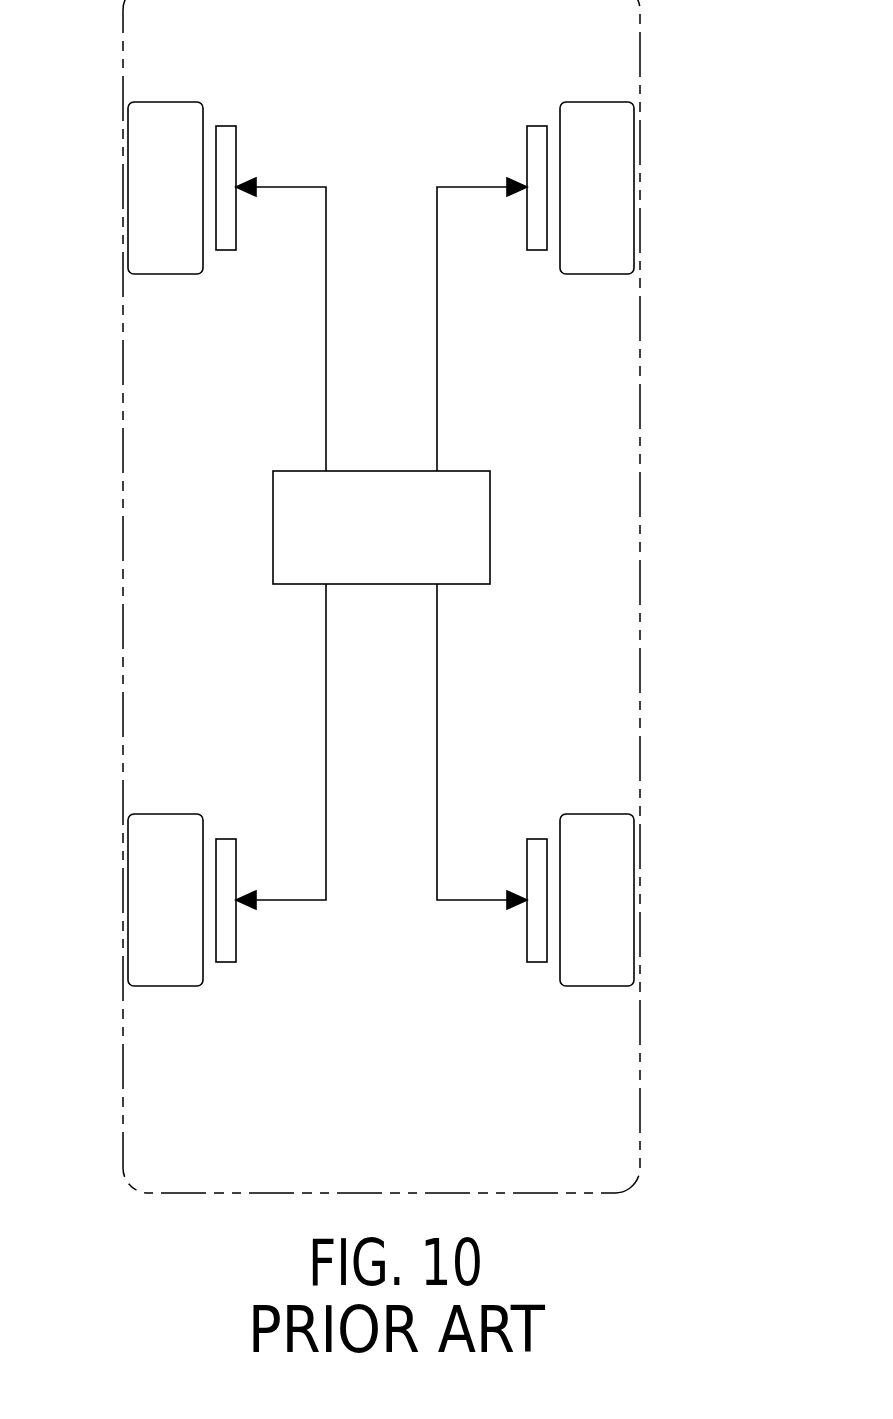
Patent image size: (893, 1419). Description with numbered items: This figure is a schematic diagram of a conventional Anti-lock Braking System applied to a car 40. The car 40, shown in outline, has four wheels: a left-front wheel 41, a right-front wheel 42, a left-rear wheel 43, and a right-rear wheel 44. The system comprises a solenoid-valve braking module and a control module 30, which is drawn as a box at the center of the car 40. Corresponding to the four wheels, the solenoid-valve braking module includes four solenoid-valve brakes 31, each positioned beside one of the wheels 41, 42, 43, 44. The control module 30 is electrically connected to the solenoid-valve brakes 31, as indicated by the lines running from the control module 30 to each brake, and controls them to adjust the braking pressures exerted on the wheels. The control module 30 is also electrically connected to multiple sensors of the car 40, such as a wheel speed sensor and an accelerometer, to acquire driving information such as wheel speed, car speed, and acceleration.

The control module 30 is at (490, 507).
The solenoid-valve brake 31 is at (226, 135).
The car 40 is at (640, 497).
The left-front wheel 41 is at (148, 197).
The right-front wheel 42 is at (613, 200).
The left-rear wheel 43 is at (148, 893).
The right-rear wheel 44 is at (613, 890).